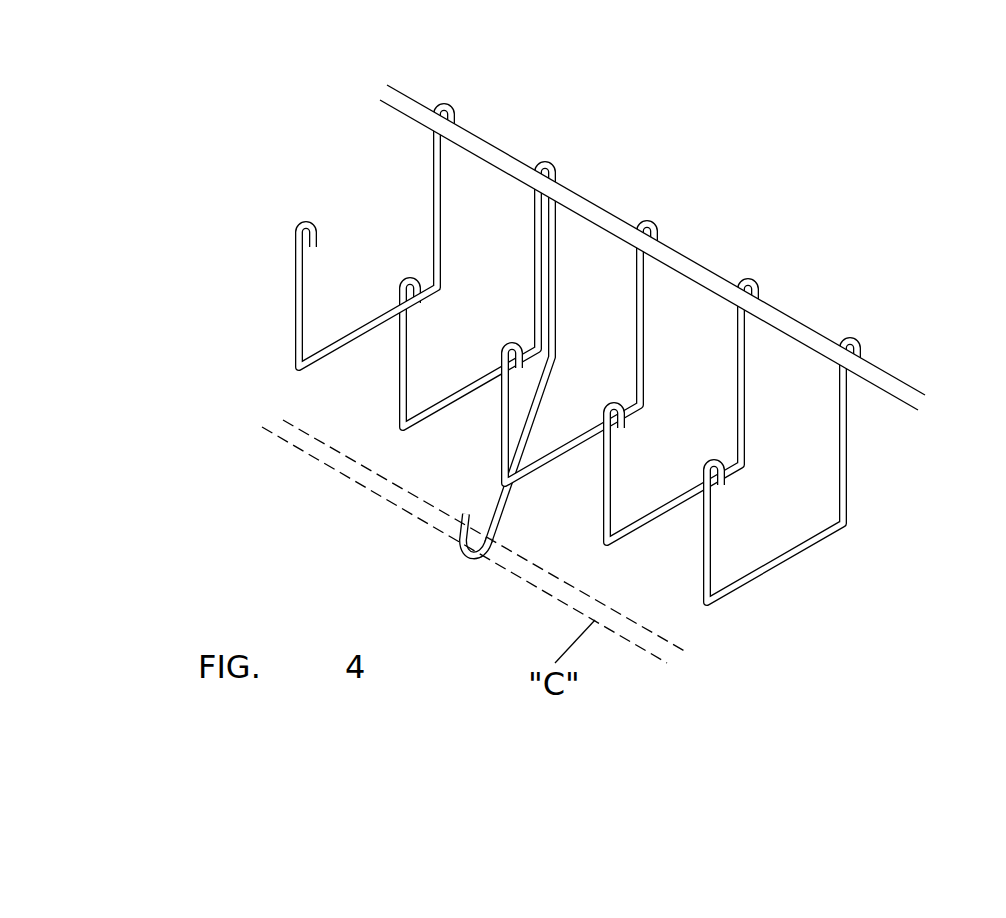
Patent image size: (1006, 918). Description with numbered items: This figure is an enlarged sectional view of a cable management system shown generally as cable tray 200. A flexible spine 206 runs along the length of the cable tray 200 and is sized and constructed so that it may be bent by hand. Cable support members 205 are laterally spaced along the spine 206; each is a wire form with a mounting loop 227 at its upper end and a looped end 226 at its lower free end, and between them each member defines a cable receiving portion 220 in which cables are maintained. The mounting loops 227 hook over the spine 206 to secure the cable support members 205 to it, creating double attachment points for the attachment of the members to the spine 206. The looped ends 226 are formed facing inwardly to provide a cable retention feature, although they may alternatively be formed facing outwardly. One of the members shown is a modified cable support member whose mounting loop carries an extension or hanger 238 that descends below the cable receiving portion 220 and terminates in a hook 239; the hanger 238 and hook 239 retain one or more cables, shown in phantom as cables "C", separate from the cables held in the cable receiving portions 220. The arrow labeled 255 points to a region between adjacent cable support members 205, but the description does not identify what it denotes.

The cable tray 200 is at (574, 345).
The cable support members 205 is at (287, 353).
The flexible spine 206 is at (708, 278).
The cable receiving portions 220 is at (784, 449).
The looped ends 226 is at (707, 475).
The mounting loops 227 is at (857, 340).
The hanger 238 is at (508, 497).
The hook 239 is at (477, 558).
The gap 255 is at (566, 258).